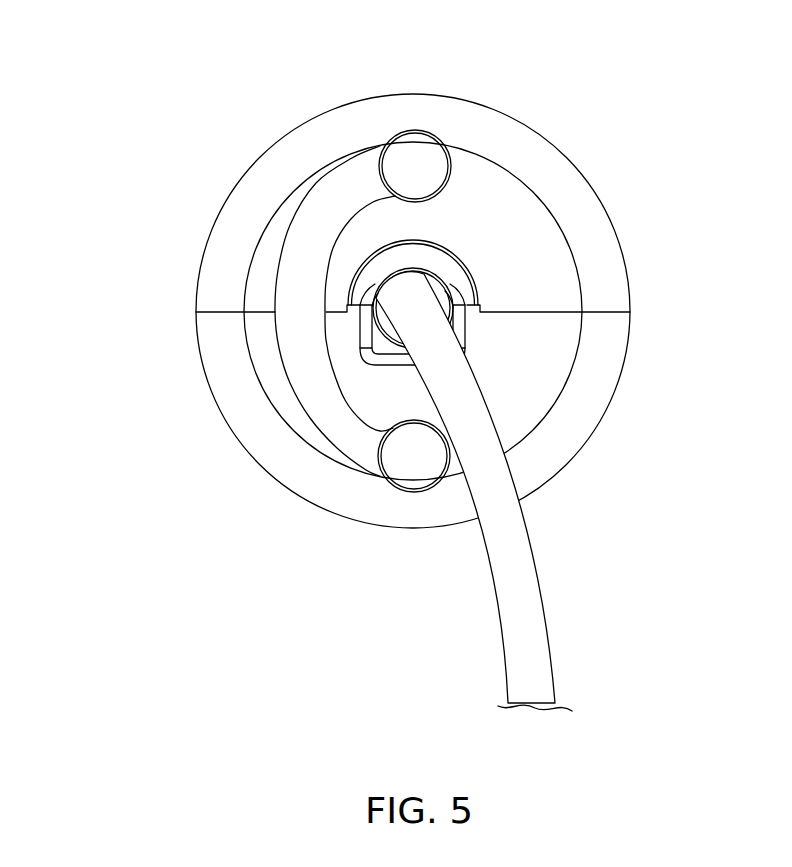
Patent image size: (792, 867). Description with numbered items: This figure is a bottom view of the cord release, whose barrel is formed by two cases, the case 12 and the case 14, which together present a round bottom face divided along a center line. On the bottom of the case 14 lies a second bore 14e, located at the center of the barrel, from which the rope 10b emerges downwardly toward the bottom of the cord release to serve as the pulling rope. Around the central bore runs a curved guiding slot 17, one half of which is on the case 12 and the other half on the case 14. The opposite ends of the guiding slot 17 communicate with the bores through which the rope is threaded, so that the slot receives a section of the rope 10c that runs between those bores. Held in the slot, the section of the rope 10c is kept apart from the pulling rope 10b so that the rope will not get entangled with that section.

The case 12 is at (527, 147).
The case 14 is at (572, 438).
The second bore 14e is at (445, 305).
The curved guiding slot 17 is at (272, 248).
The section of the rope 10c is at (298, 370).
The rope 10b is at (518, 602).